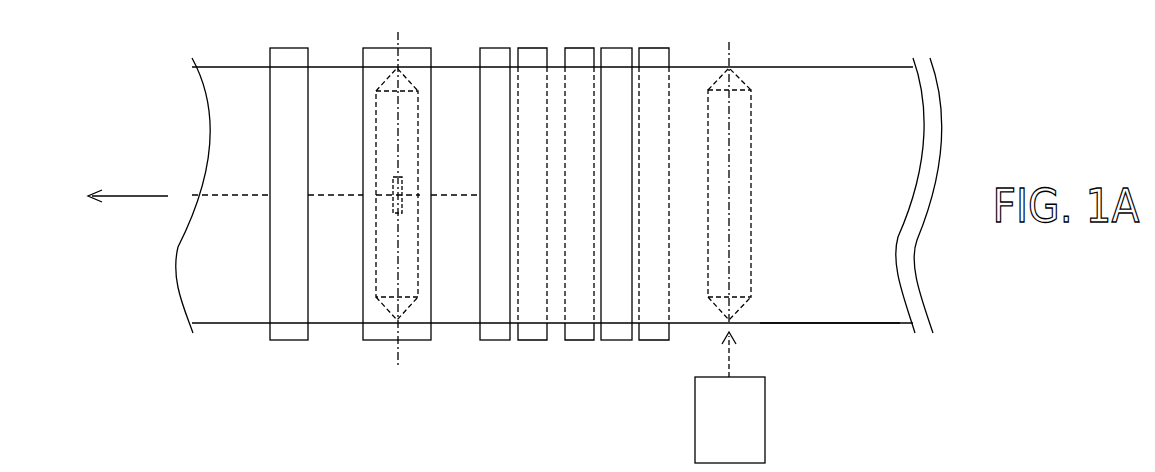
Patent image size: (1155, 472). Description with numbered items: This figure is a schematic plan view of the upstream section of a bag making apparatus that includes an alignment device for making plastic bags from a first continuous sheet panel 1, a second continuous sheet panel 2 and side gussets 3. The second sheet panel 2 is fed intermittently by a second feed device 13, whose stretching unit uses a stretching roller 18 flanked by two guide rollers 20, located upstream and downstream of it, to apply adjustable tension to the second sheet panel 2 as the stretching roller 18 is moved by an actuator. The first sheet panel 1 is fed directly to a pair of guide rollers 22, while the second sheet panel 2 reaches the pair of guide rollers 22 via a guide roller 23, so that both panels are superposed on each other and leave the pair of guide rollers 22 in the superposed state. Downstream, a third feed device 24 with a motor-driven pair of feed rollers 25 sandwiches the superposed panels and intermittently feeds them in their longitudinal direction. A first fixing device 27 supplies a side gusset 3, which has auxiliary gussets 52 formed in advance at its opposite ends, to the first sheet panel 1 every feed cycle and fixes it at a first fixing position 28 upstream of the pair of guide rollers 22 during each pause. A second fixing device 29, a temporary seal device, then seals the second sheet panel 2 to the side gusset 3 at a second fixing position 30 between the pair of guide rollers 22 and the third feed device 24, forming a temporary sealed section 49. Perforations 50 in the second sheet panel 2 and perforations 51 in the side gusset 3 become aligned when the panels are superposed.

The first continuous sheet panel 1 is at (889, 300).
The second continuous sheet panel 2 is at (843, 300).
The side gusset 3 is at (751, 260).
The second feed device 13 is at (544, 265).
The stretching roller 18 is at (618, 330).
The guide rollers 20 is at (580, 330).
The pair of guide rollers 22 is at (495, 330).
The guide roller 23 is at (532, 330).
The third feed device 24 is at (266, 354).
The pair of feed rollers 25 is at (291, 330).
The first fixing device 27 is at (757, 415).
The first fixing position 28 is at (733, 150).
The second fixing device 29 is at (418, 330).
The second fixing position 30 is at (396, 125).
The temporary sealed section 49 is at (403, 185).
The perforations 50 is at (241, 193).
The perforations 51 is at (740, 193).
The auxiliary gussets 52 is at (712, 84).